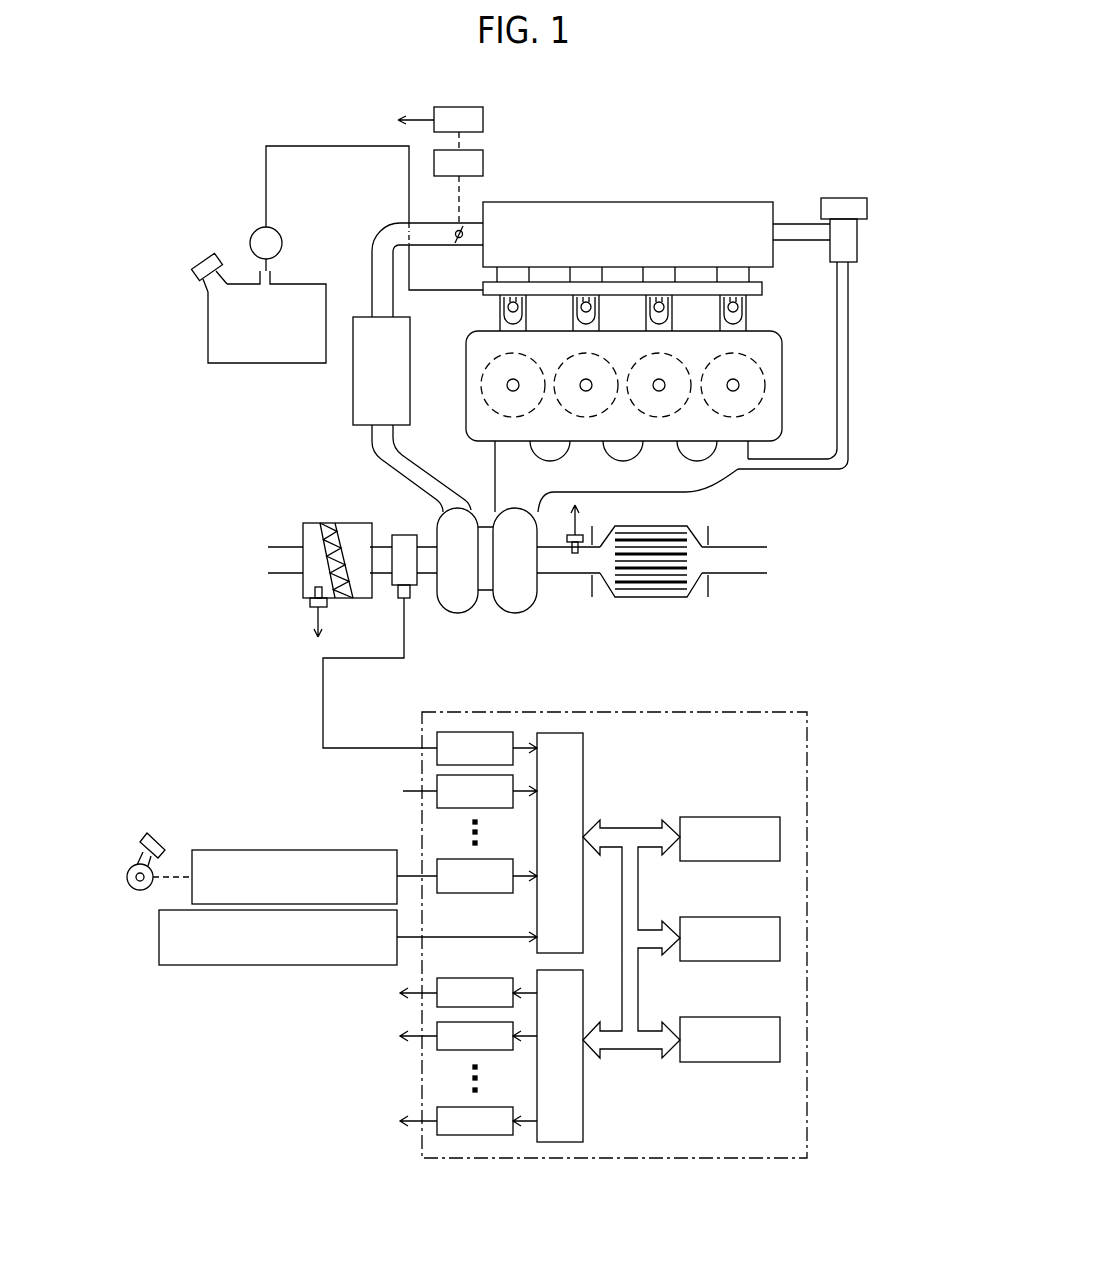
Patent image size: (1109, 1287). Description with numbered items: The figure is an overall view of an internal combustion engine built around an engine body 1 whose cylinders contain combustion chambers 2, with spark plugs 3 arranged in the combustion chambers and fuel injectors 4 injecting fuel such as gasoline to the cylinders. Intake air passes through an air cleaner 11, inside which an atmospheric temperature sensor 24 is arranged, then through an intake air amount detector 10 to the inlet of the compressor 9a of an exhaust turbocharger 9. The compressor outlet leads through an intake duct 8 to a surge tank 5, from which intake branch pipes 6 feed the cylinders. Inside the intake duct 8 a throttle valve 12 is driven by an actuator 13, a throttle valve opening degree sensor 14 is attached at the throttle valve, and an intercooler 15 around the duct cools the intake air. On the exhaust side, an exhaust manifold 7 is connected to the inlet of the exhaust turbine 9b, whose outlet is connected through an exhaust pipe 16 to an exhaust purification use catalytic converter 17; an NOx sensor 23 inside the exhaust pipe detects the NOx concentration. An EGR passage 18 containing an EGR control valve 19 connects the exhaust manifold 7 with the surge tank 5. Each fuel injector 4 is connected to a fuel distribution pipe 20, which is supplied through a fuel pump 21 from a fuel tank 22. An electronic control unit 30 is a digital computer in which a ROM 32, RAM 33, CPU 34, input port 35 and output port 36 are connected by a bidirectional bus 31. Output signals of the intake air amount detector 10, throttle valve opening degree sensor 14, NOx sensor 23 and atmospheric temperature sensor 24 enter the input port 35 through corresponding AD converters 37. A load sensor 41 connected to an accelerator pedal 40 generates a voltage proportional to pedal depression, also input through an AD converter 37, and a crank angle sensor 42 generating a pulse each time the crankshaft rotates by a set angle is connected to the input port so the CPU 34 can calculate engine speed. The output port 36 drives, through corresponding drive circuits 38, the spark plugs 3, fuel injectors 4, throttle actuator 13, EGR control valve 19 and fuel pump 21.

The engine body 1 is at (783, 365).
The combustion chambers 2 is at (490, 414).
The spark plugs 3 is at (511, 387).
The fuel injectors 4 is at (510, 320).
The surge tank 5 is at (698, 212).
The intake branch pipes 6 is at (503, 276).
The exhaust manifold 7 is at (717, 478).
The intake duct 8 is at (375, 288).
The exhaust turbocharger 9 is at (488, 605).
The compressor 9a is at (450, 605).
The exhaust turbine 9b is at (520, 605).
The intake air amount detector 10 is at (403, 534).
The air cleaner 11 is at (308, 523).
The throttle valve 12 is at (453, 243).
The actuator 13 is at (482, 168).
The throttle valve opening degree sensor 14 is at (482, 122).
The intercooler 15 is at (353, 400).
The exhaust pipe 16 is at (563, 574).
The exhaust purification use catalytic converter 17 is at (652, 587).
The EGR passage 18 is at (846, 417).
The EGR control valve 19 is at (856, 240).
The fuel distribution pipe 20 is at (620, 282).
The fuel pump 21 is at (252, 234).
The fuel tank 22 is at (208, 323).
The NOx sensor 23 is at (582, 530).
The atmospheric temperature sensor 24 is at (303, 602).
The electronic control unit 30 is at (809, 751).
The bidirectional bus 31 is at (632, 828).
The ROM 32 is at (748, 817).
The RAM 33 is at (748, 917).
The CPU 34 is at (748, 1017).
The input port 35 is at (585, 752).
The output port 36 is at (585, 1124).
The AD converters 37 is at (437, 863).
The drive circuits 38 is at (437, 1108).
The accelerator pedal 40 is at (150, 838).
The load sensor 41 is at (233, 850).
The crank angle sensor 42 is at (215, 966).